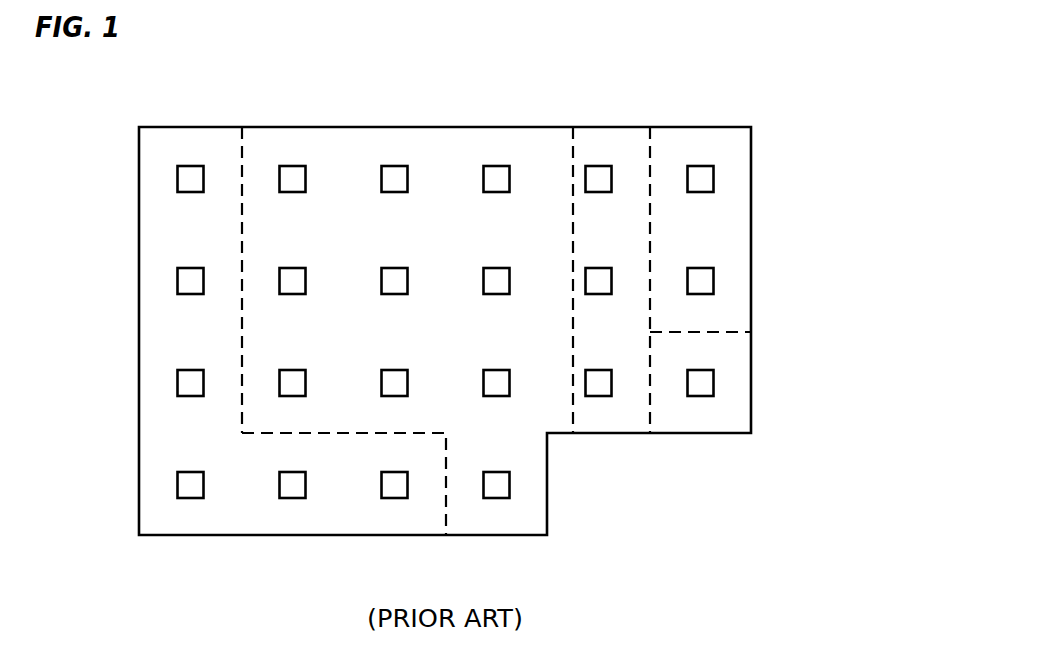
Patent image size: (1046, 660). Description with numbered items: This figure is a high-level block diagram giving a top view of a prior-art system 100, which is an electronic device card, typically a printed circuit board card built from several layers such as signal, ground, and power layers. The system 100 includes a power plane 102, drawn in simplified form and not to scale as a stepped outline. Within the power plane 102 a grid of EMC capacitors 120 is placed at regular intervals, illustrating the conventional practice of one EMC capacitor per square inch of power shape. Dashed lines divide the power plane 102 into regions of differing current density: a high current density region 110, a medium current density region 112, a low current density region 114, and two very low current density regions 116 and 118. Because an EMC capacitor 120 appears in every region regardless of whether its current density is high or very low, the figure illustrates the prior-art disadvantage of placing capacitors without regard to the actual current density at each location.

The system 100 is at (866, 62).
The power plane 102 is at (139, 184).
The high current density region 110 is at (408, 339).
The medium current density region 112 is at (626, 333).
The low current density region 114 is at (715, 238).
The very low current density region 116 is at (358, 493).
The very low current density region 118 is at (716, 422).
The EMC capacitor 120 is at (200, 192).